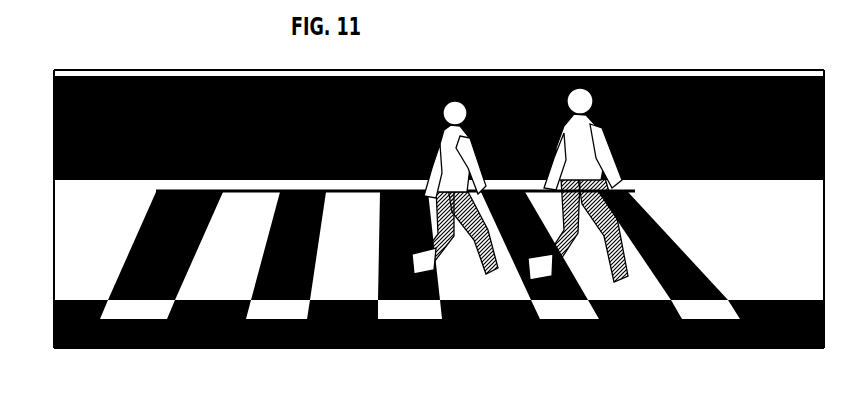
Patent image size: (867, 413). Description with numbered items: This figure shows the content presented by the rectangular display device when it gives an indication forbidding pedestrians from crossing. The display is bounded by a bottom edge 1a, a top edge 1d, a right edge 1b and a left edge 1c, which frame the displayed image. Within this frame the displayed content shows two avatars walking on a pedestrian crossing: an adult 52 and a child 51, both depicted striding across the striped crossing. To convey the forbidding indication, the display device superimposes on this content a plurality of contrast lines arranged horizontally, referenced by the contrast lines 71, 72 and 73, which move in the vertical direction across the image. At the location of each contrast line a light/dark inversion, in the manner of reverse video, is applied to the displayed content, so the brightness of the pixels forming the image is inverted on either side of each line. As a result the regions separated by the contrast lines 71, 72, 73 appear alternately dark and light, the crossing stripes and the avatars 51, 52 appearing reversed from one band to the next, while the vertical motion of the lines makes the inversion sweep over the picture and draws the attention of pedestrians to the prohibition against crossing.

The bottom edge 1a is at (388, 341).
The right edge 1b is at (817, 277).
The left edge 1c is at (45, 272).
The top edge 1d is at (397, 62).
The contrast line 71 is at (66, 292).
The contrast line 72 is at (70, 173).
The contrast line 73 is at (93, 67).
The child avatar 51 is at (455, 187).
The adult avatar 52 is at (578, 185).